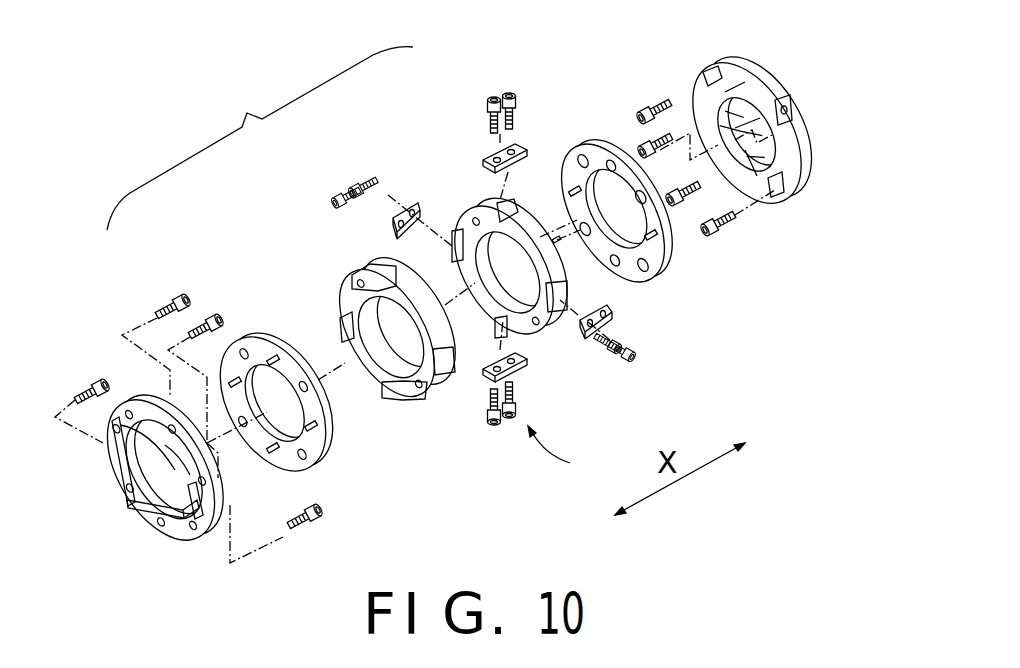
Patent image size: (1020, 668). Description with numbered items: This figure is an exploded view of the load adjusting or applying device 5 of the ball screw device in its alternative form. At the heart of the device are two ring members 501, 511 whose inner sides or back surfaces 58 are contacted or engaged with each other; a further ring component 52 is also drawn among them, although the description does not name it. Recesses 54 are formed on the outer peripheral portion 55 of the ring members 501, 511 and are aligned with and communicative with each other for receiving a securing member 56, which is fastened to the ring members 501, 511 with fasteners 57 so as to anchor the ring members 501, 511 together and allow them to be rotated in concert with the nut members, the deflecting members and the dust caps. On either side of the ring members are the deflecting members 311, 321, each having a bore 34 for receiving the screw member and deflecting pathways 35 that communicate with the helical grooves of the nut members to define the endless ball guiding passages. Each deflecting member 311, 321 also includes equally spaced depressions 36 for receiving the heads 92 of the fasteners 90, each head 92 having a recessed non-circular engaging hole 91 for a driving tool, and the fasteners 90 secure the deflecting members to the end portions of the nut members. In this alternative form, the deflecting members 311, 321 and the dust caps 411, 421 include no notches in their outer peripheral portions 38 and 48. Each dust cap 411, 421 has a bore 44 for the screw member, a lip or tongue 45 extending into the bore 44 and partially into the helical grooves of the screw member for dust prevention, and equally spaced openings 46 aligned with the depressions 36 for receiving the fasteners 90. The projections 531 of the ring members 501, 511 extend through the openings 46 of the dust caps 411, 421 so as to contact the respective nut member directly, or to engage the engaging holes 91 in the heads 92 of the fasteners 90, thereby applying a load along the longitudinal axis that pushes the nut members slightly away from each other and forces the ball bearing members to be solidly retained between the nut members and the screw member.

The load adjusting or applying device 5 is at (558, 454).
The bore 34 is at (175, 488).
The deflecting pathways 35 is at (127, 468).
The deflecting member 311 is at (157, 523).
The depressions 36 is at (772, 188).
The outer peripheral portion 38 is at (762, 73).
The deflecting member 321 is at (802, 172).
The bore 44 is at (600, 202).
The lip or tongue 45 is at (273, 437).
The orifices or openings 46 is at (302, 377).
The dust cap 411 is at (318, 452).
The outer peripheral portion 48 is at (593, 137).
The dust cap 421 is at (650, 270).
The inner ring 52 is at (397, 352).
The ring member 501 is at (433, 383).
The projections 531 is at (453, 348).
The recesses 54 is at (500, 323).
The outer peripheral portion 55 is at (562, 278).
The securing member 56 is at (484, 157).
The fasteners 57 is at (352, 190).
The inner sides or back surfaces 58 is at (472, 228).
The ring member 511 is at (533, 328).
The fasteners 90 is at (680, 128).
The engaging hole 91 is at (673, 203).
The head 92 is at (715, 228).